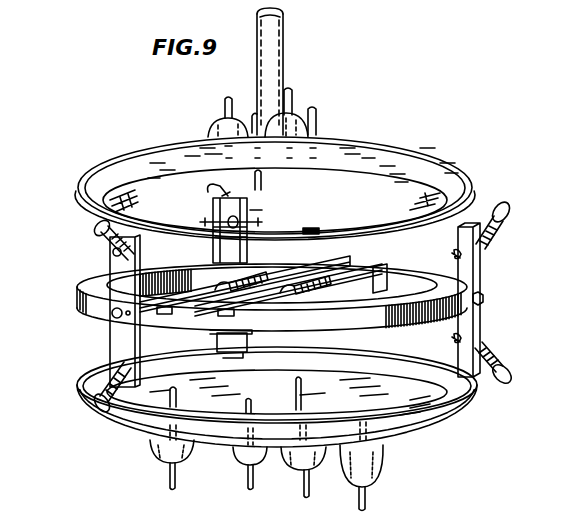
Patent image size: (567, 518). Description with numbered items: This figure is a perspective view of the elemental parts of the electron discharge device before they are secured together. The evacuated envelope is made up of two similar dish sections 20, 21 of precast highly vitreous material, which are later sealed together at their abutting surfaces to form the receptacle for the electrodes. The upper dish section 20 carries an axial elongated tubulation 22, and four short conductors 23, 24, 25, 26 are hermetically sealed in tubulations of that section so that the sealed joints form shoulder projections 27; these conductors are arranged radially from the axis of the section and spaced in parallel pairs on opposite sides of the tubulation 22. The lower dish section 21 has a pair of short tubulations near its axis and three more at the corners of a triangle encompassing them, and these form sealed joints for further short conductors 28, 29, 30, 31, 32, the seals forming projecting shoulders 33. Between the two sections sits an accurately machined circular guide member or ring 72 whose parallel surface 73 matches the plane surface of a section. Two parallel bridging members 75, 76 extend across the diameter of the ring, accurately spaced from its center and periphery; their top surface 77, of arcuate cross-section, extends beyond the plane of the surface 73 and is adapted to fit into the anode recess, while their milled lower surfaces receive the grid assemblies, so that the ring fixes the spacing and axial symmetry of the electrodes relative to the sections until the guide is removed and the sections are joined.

The dish section 20 is at (400, 157).
The dish section 21 is at (430, 422).
The axial elongated tubulation 22 is at (280, 53).
The short conductor 23 is at (225, 106).
The short conductor 24 is at (259, 117).
The short conductor 25 is at (292, 96).
The short conductor 26 is at (317, 115).
The shoulder projection 27 is at (318, 135).
The short conductor 28 is at (248, 482).
The short conductor 29 is at (310, 479).
The short conductor 30 is at (170, 477).
The short conductor 31 is at (366, 496).
The short conductor 32 is at (300, 482).
The projecting shoulder 33 is at (381, 451).
The circular guide member 72 is at (96, 310).
The parallel surface 73 is at (450, 284).
The bridging member 75 is at (241, 291).
The bridging member 76 is at (327, 287).
The top surface 77 is at (283, 266).